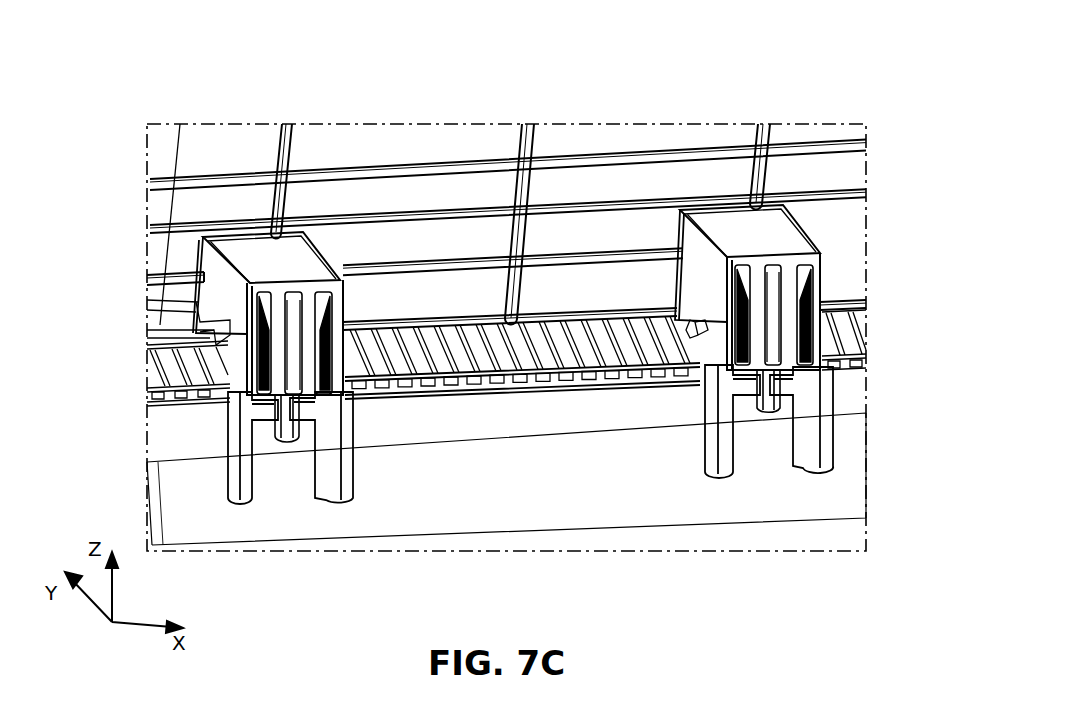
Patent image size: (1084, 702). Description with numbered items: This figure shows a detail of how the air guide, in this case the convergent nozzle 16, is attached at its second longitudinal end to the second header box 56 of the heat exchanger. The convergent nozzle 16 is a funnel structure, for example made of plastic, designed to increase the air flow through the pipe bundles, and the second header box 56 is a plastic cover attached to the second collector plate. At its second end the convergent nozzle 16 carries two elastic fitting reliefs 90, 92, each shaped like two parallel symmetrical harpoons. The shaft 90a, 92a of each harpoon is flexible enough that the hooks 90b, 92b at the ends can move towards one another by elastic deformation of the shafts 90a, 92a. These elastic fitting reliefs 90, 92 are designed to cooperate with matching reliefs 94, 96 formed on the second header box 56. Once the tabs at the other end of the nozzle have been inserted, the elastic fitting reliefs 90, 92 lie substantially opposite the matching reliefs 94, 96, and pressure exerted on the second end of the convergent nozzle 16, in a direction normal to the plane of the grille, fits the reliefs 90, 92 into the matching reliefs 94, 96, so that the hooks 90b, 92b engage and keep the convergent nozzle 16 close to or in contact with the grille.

The convergent nozzle 16 is at (428, 168).
The second header box 56 is at (496, 510).
The elastic fitting relief 90 is at (196, 335).
The shaft 90a is at (305, 345).
The hooks 90b is at (300, 432).
The elastic fitting relief 92 is at (817, 335).
The shaft 92a is at (758, 323).
The hooks 92b is at (785, 400).
The matching relief 94 is at (205, 448).
The matching relief 96 is at (727, 437).